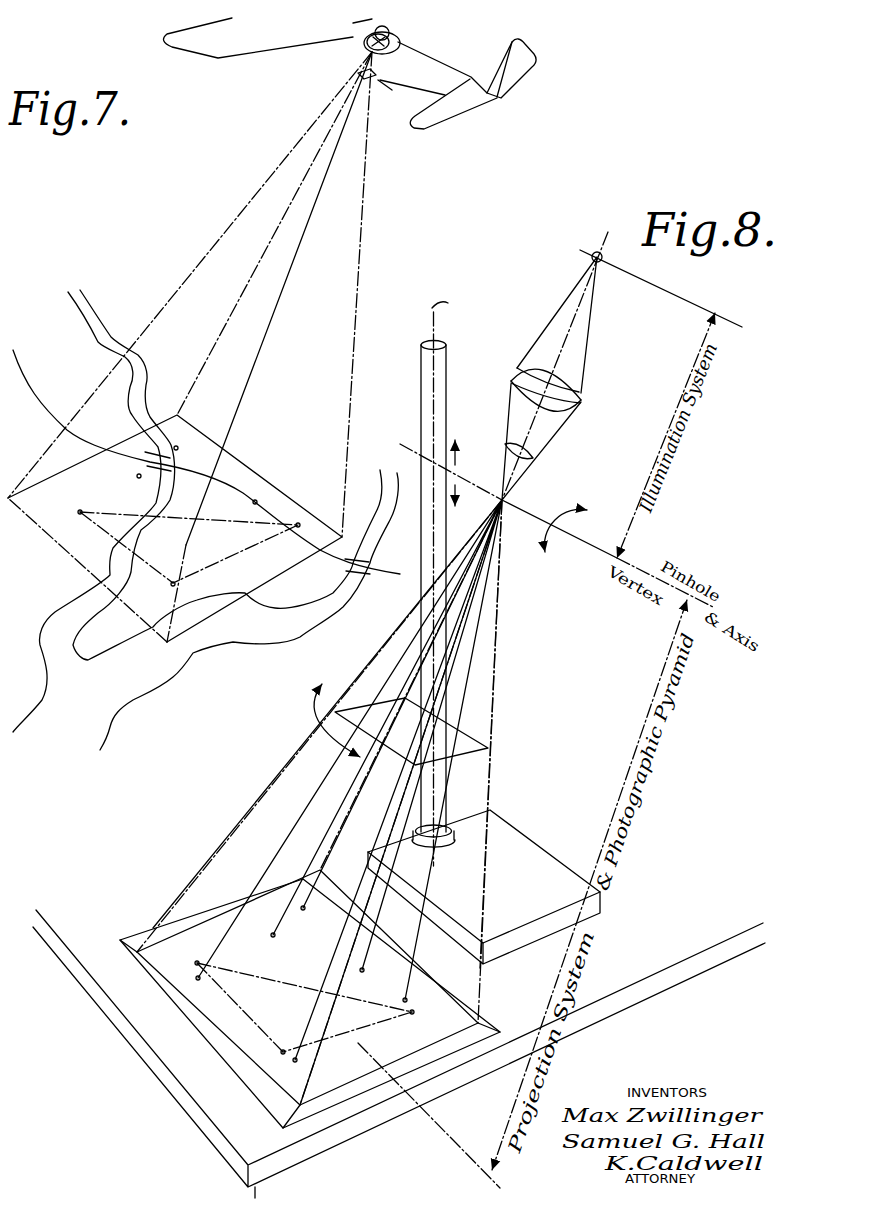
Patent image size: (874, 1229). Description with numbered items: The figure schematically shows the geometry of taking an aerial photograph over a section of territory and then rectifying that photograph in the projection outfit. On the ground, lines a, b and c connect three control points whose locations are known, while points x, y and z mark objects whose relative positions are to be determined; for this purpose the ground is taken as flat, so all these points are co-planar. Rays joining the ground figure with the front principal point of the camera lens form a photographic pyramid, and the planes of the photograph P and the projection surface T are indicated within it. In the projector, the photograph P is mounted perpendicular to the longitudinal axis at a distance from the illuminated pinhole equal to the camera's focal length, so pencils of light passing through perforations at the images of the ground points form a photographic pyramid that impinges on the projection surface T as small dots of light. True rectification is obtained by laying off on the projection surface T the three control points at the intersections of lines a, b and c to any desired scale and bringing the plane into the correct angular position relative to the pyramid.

In FIG. 7, the photograph P is at (380, 65).
In FIG. 8, the photograph P is at (470, 737).
In FIG. 7, the projection surface T is at (393, 94).
In FIG. 8, the projection surface T is at (357, 1085).
In FIG. 7, the point x is at (129, 477).
In FIG. 8, the point x is at (263, 933).
In FIG. 7, the point y is at (182, 451).
In FIG. 8, the point y is at (292, 909).
In FIG. 7, the point z is at (246, 501).
In FIG. 8, the point z is at (368, 972).
In FIG. 7, the line a is at (126, 547).
In FIG. 8, the line a is at (240, 1007).
In FIG. 7, the line b is at (234, 555).
In FIG. 8, the line b is at (346, 1037).
In FIG. 7, the line c is at (189, 518).
In FIG. 8, the line c is at (304, 987).